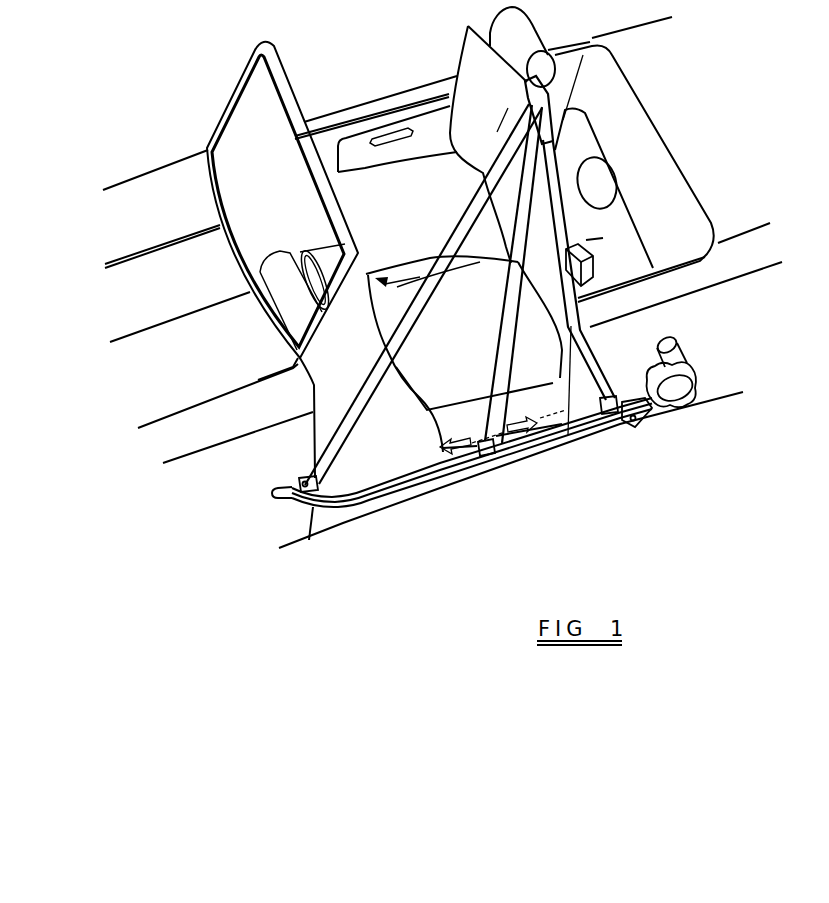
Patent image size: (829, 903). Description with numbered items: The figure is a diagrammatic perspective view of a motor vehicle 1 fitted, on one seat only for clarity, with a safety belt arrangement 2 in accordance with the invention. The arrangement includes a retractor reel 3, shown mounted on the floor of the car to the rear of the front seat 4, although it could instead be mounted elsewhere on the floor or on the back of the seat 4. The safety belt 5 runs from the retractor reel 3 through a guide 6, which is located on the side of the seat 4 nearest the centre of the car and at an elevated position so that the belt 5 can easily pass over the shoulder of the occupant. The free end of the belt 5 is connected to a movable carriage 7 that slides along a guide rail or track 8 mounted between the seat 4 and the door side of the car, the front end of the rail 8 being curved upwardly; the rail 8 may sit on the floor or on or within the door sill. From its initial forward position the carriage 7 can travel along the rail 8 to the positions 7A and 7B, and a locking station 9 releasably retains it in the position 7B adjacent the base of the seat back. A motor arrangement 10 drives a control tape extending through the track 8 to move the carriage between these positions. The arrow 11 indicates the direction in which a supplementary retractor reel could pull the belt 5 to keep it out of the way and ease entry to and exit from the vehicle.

The motor vehicle 1 is at (374, 56).
The safety belt arrangement 2 is at (530, 463).
The retractor reel 3 is at (602, 266).
The front seat 4 is at (464, 354).
The safety belt 5 is at (482, 170).
The guide 6 is at (550, 78).
The movable carriage 7 is at (282, 475).
The carriage position 7A is at (490, 457).
The carriage position 7B is at (610, 414).
The guide rail or track 8 is at (346, 508).
The locking station 9 is at (645, 417).
The motor arrangement 10 is at (678, 388).
The arrow 11 is at (406, 295).